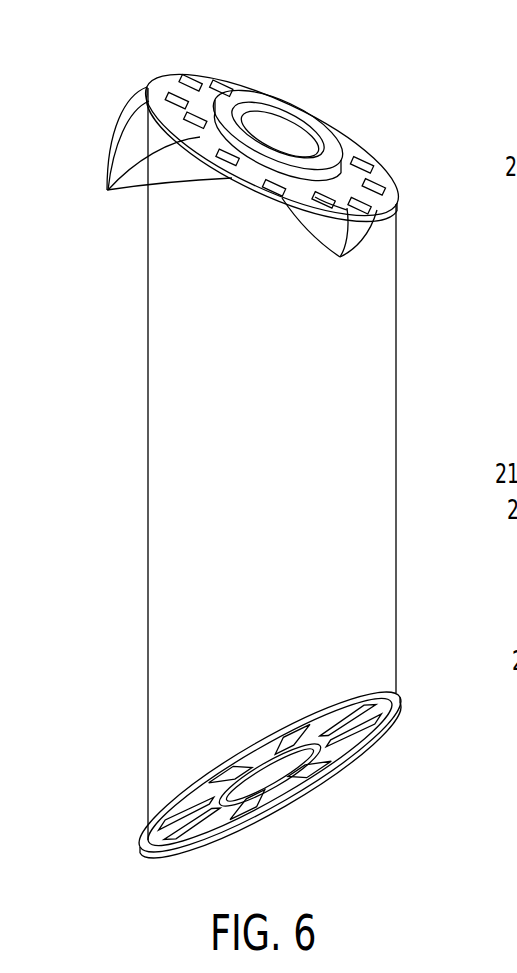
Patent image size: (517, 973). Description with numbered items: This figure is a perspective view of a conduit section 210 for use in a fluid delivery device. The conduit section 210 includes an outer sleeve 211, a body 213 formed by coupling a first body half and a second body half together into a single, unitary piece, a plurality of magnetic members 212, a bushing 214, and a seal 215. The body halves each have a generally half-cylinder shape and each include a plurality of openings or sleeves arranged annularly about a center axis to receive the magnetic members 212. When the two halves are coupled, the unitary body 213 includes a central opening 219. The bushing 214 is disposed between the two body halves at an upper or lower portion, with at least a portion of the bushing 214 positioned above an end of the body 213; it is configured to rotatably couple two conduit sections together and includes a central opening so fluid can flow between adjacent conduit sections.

The conduit section 210 is at (146, 62).
The outer sleeve 211 is at (158, 663).
The magnetic members 212 is at (168, 78).
The body 213 is at (148, 88).
The bushing 214 is at (298, 113).
The seal 215 is at (398, 722).
The central opening 219 is at (282, 823).